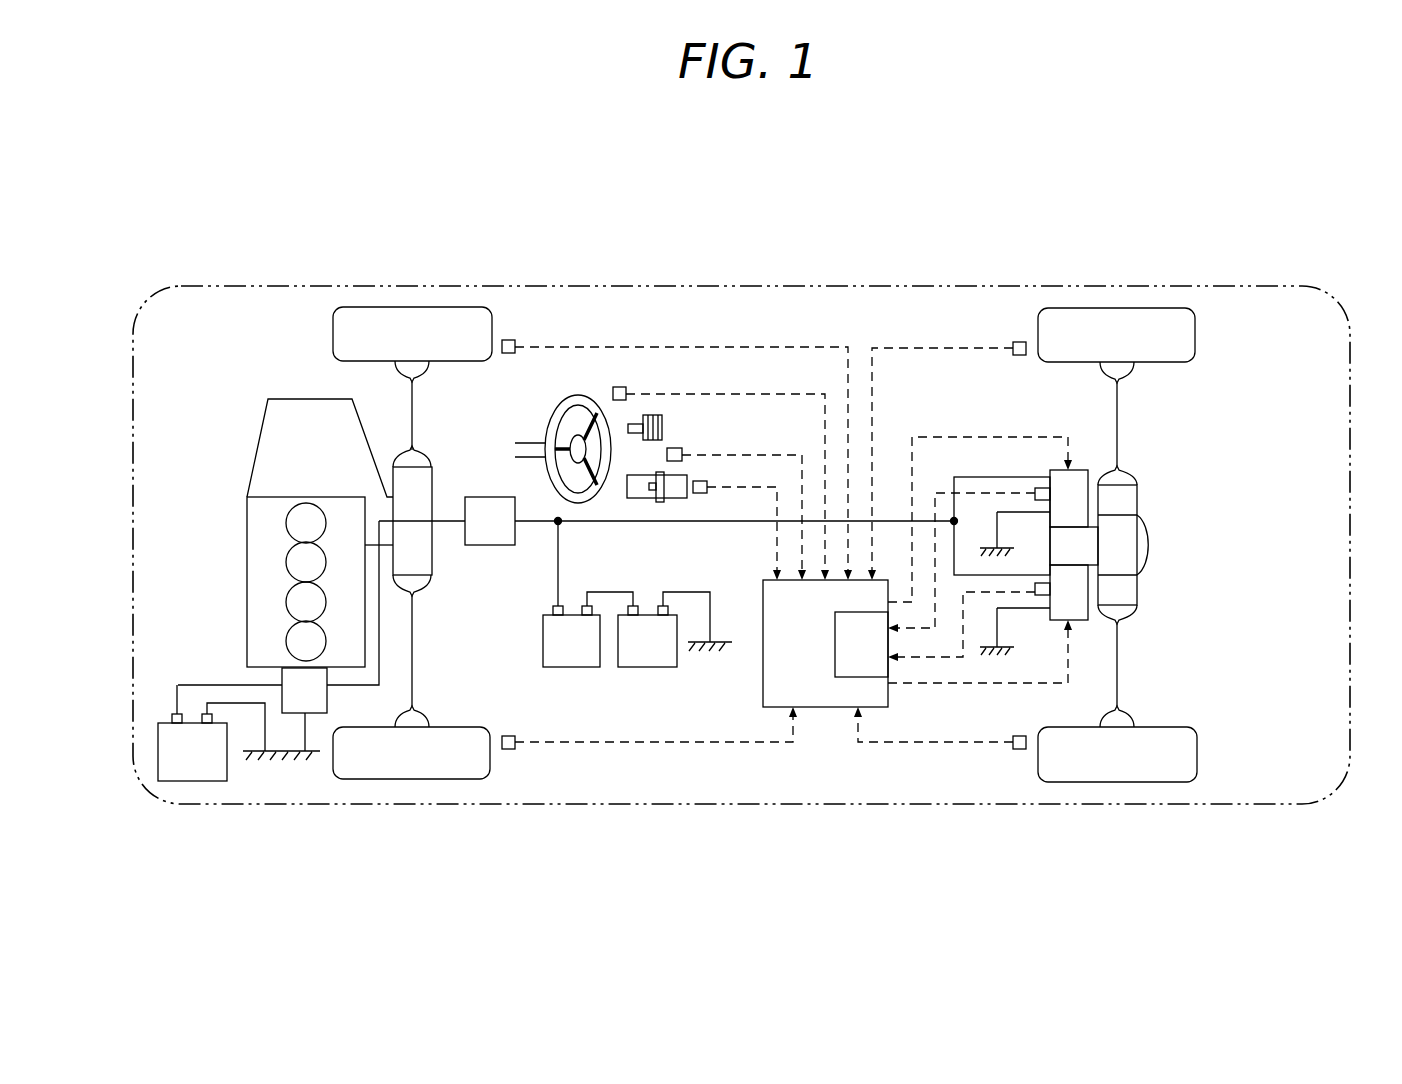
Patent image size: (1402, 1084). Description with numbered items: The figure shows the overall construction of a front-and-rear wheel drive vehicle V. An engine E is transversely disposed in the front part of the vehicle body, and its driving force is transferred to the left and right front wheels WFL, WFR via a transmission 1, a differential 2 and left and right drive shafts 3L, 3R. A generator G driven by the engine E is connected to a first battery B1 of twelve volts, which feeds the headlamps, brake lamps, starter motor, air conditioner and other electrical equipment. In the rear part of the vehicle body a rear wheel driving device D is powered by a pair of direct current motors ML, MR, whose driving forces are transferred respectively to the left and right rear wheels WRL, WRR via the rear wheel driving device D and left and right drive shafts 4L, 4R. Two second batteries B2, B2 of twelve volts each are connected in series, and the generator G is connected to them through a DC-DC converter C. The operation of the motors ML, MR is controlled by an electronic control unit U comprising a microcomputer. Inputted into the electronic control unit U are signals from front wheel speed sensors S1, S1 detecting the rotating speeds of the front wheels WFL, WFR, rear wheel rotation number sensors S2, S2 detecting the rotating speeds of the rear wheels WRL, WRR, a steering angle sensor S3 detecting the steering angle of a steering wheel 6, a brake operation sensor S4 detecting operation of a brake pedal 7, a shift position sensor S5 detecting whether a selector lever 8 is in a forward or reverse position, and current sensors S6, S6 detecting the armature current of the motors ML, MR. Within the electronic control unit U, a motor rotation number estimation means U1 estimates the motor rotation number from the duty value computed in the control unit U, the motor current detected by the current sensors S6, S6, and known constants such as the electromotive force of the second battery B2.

The vehicle V is at (833, 255).
The transmission 1 is at (265, 455).
The differential 2 is at (416, 505).
The right drive shaft 3R is at (412, 411).
The left drive shaft 3L is at (412, 693).
The right drive shaft 4R is at (1117, 428).
The left drive shaft 4L is at (1117, 683).
The steering wheel 6 is at (558, 410).
The brake pedal 7 is at (662, 413).
The selector lever 8 is at (659, 502).
The engine E is at (255, 587).
The generator G is at (318, 706).
The DC-DC converter C is at (502, 539).
The first battery B1 is at (210, 775).
The second battery B2 is at (593, 662).
The electronic control unit U is at (812, 664).
The motor rotation number estimation means U1 is at (880, 664).
The rear wheel driving device D is at (1130, 559).
The direct current motor MR is at (1078, 478).
The direct current motor ML is at (1078, 612).
The right front wheel WFR is at (383, 318).
The left front wheel WFL is at (387, 765).
The right rear wheel WRR is at (1113, 318).
The left rear wheel WRL is at (1122, 768).
The front wheel speed sensor S1 is at (509, 340).
The rear wheel rotation number sensor S2 is at (1013, 348).
The steering angle sensor S3 is at (620, 387).
The brake operation sensor S4 is at (675, 448).
The shift position sensor S5 is at (705, 481).
The current sensor S6 is at (1042, 490).